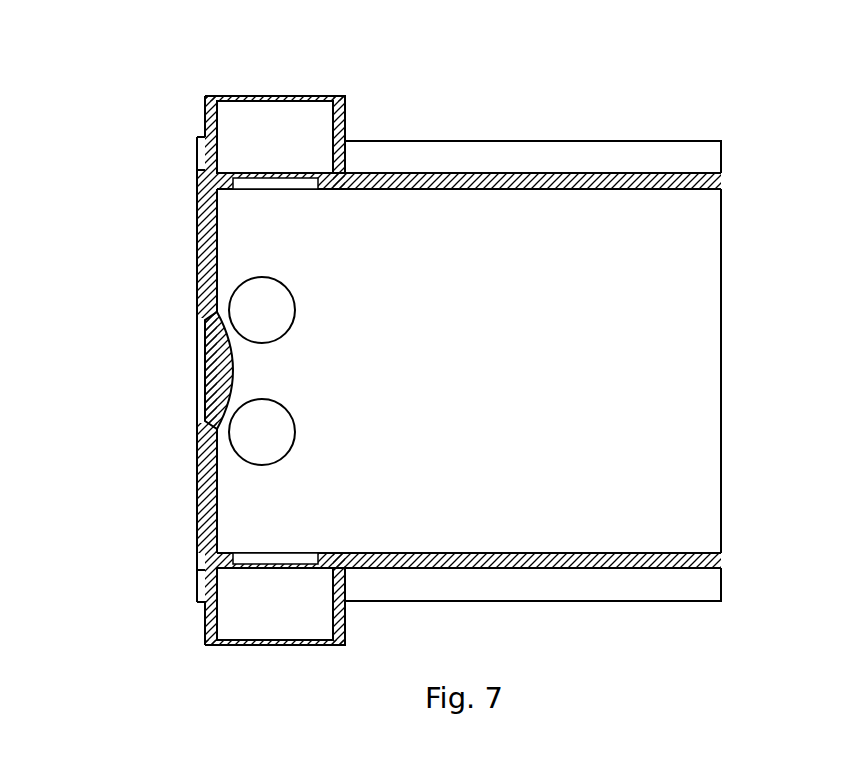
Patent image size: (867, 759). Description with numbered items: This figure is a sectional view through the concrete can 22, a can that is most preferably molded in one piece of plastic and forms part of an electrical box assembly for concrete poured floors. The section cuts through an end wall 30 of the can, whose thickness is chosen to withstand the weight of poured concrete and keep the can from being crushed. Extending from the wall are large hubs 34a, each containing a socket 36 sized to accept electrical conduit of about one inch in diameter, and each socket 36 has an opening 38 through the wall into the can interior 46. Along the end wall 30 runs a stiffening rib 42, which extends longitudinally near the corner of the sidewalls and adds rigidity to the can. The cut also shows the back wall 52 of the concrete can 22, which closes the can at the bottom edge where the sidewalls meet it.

The concrete can 22 is at (137, 99).
The end wall 30 is at (518, 565).
The large hub 34a is at (343, 618).
The socket 36 is at (273, 140).
The opening 38 is at (275, 183).
The stiffening rib 42 is at (648, 586).
The interior chamber 46 is at (722, 355).
The back wall 52 is at (205, 252).